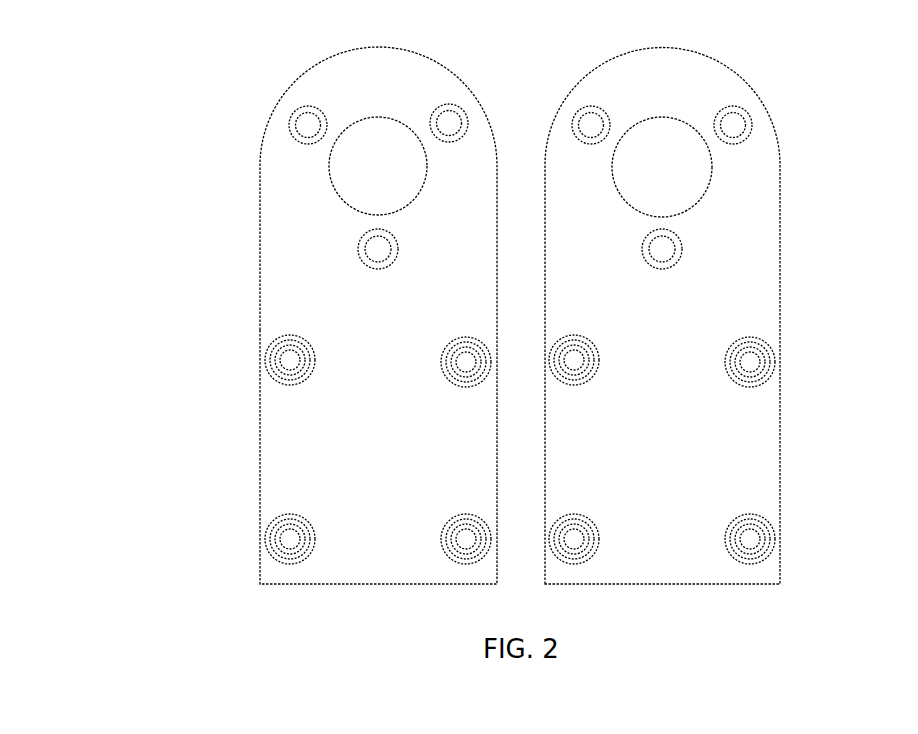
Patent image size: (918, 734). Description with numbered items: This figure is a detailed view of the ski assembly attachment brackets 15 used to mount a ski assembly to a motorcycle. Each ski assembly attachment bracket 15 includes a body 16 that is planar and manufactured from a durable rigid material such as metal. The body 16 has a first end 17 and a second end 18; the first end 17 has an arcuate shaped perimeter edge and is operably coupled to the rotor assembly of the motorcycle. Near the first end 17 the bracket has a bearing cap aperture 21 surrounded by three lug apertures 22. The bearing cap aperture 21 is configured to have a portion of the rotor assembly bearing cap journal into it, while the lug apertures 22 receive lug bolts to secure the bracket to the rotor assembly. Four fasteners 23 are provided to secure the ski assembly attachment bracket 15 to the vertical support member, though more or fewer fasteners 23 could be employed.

The ski assembly attachment bracket 15 is at (267, 315).
The body 16 is at (647, 572).
The first end 17 is at (226, 160).
The second end 18 is at (220, 562).
The bearing cap aperture 21 is at (395, 150).
The lug apertures 22 is at (307, 127).
The fasteners 23 is at (288, 358).